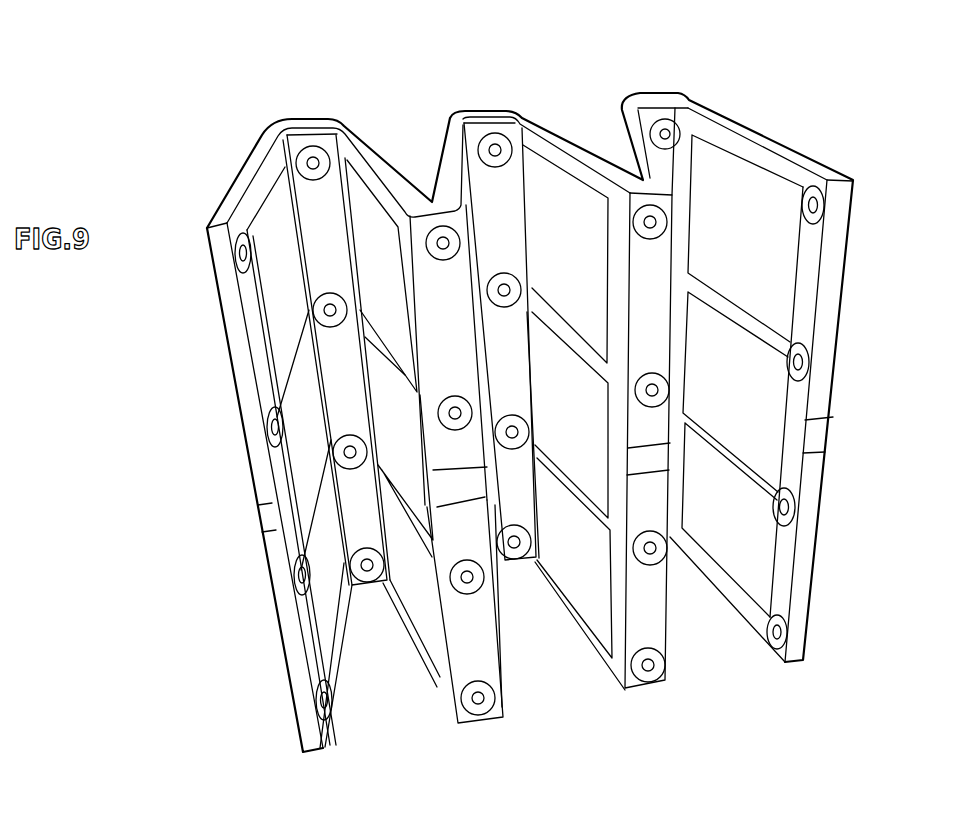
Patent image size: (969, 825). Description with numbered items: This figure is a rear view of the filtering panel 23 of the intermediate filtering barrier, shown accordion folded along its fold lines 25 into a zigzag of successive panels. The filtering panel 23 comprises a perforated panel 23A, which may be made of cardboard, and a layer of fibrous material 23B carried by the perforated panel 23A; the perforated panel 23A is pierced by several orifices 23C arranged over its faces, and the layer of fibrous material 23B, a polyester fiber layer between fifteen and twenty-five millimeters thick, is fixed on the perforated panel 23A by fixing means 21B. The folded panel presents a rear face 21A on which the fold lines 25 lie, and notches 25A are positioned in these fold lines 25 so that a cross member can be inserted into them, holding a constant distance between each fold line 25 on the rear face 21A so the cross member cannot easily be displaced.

The filtering panel 23 is at (692, 91).
The perforated panel 23A is at (255, 317).
The layer of fibrous material 23B is at (308, 120).
The orifices 23C is at (585, 253).
The fold lines 25 is at (416, 232).
The notches 25A is at (265, 508).
The rear face 21A is at (494, 712).
The fixing means 21B is at (240, 235).